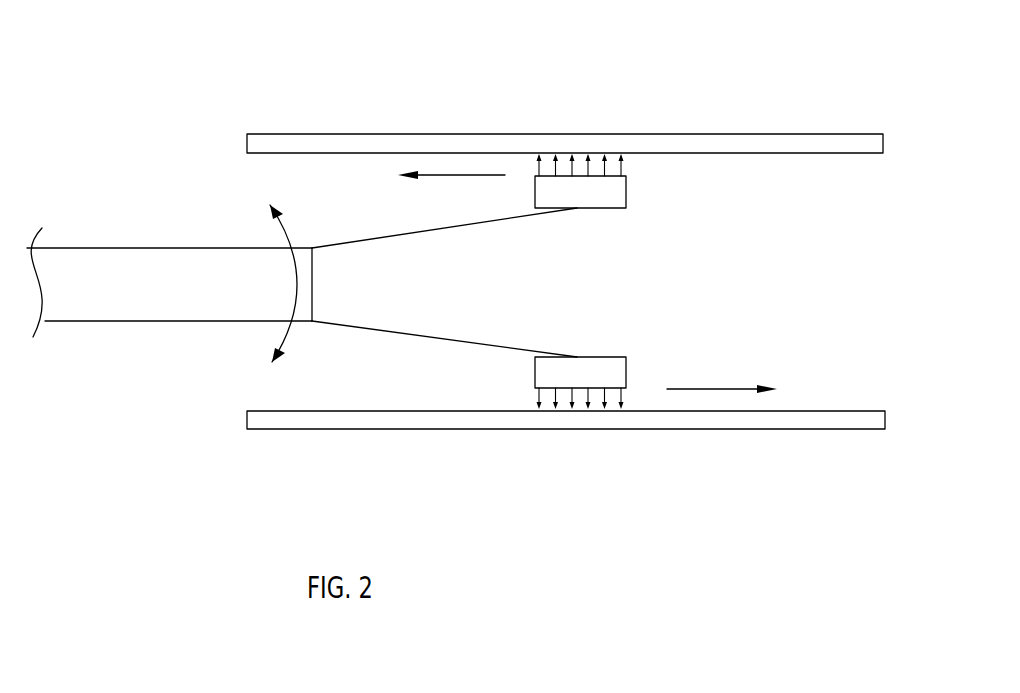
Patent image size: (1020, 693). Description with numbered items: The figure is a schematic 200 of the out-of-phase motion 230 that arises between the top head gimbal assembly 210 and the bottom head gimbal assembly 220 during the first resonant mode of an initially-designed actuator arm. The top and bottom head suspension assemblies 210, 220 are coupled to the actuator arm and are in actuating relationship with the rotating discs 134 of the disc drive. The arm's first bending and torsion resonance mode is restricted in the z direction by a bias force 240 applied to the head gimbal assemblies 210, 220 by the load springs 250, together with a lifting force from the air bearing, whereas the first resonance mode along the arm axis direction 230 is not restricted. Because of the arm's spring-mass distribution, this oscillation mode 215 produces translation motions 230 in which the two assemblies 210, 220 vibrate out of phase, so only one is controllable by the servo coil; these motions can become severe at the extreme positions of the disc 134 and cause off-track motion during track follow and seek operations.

The schematic 200 is at (682, 63).
The rotating disc 134 is at (833, 133).
The oscillation mode 215 is at (290, 328).
The load spring 250 is at (460, 228).
The top head gimbal assembly 210 is at (602, 210).
The bottom head gimbal assembly 220 is at (602, 353).
The bias force 240 is at (577, 163).
The out-of-phase motion 230 is at (452, 178).